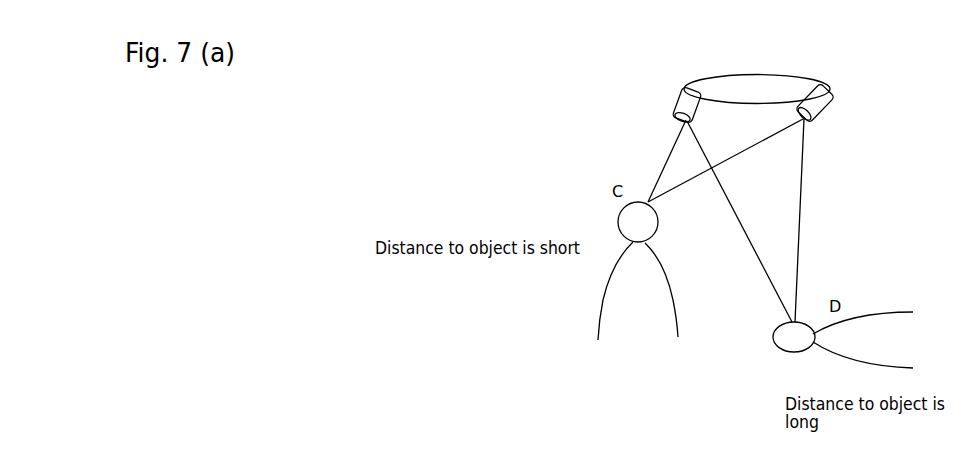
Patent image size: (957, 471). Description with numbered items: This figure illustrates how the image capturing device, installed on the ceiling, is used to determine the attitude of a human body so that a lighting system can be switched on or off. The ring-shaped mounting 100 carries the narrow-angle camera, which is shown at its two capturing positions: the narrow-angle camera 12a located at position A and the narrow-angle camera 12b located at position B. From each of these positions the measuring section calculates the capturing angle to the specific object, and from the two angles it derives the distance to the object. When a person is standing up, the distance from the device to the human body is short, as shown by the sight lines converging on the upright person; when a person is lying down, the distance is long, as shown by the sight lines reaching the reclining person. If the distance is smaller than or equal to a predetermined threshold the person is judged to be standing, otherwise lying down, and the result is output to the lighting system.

The ring-shaped object (camera mounting ring) 100 is at (748, 46).
The narrow-angle camera located at position A 12a is at (680, 89).
The narrow-angle camera located at position B 12b is at (823, 122).